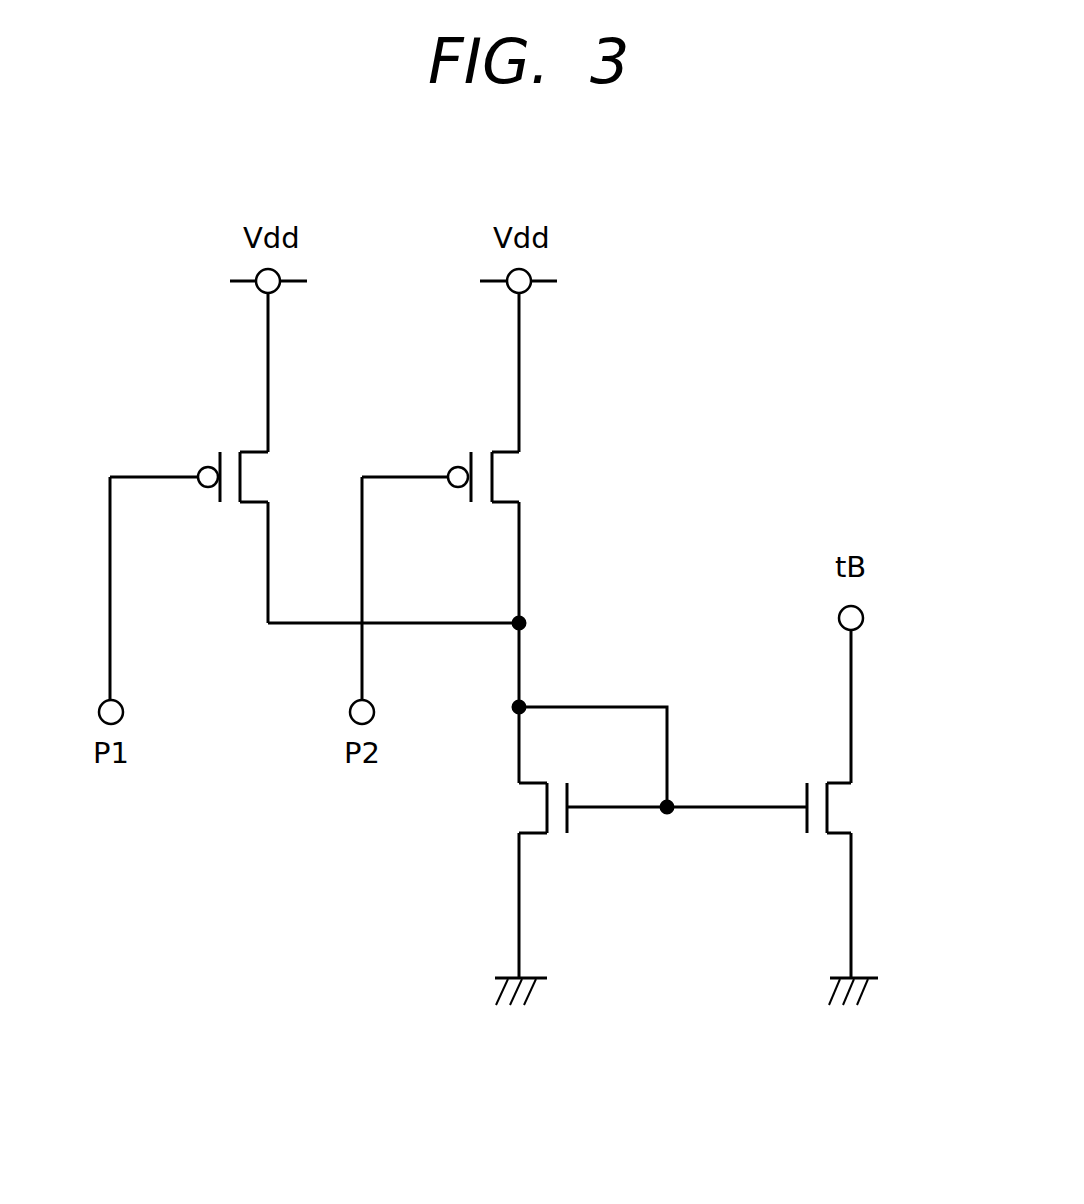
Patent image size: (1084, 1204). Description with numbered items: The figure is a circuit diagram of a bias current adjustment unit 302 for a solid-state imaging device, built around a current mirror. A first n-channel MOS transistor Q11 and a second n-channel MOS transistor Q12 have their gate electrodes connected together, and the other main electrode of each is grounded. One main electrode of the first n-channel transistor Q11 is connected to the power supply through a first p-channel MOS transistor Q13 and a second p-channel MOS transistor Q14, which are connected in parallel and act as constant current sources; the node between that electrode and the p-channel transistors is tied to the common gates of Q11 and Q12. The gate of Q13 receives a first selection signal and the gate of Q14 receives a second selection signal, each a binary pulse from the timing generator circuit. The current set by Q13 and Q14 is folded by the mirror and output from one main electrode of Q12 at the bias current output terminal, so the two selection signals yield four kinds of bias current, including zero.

The bias current adjustment unit 302 is at (746, 350).
The first n-channel MOS transistor Q11 is at (545, 806).
The second n-channel MOS transistor Q12 is at (829, 809).
The first p-channel MOS transistor Q13 is at (242, 479).
The second p-channel MOS transistor Q14 is at (494, 479).